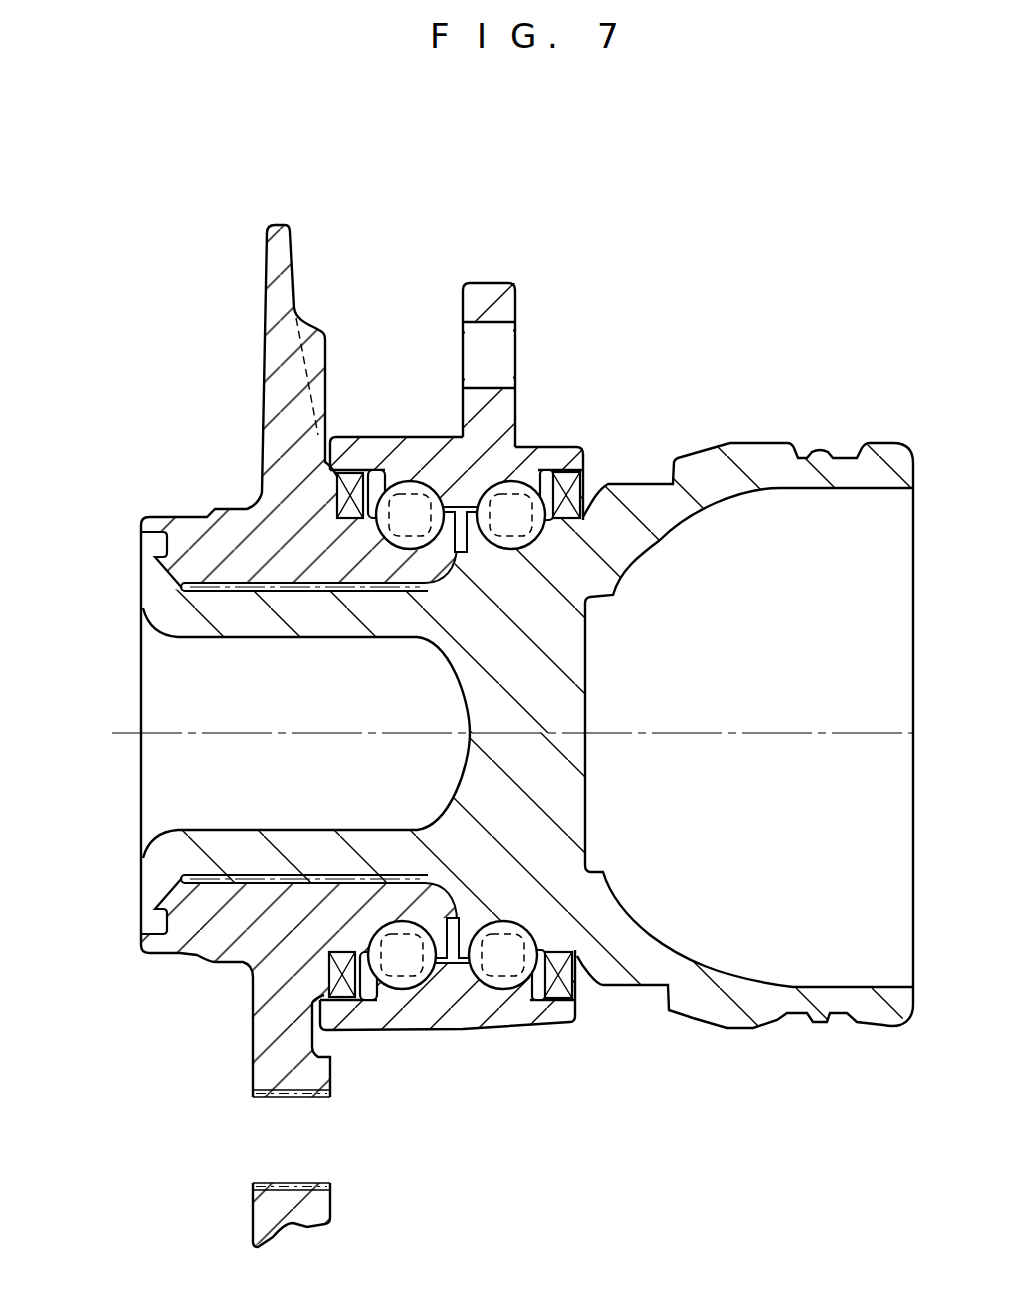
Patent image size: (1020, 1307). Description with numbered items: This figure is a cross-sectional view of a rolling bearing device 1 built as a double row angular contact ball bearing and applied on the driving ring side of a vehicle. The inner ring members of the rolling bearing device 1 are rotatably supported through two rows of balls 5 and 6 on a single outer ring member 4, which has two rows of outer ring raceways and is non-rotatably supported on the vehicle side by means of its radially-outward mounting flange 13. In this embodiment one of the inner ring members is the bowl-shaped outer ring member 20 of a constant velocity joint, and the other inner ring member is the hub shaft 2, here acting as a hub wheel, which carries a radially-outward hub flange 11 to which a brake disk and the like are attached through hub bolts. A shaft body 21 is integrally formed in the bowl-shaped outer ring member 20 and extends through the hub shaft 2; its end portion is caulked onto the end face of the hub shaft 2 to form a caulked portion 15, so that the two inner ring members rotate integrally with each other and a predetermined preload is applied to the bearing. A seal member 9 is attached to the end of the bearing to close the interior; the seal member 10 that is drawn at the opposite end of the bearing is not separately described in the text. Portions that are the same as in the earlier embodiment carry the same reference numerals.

The rolling bearing device 1 is at (555, 308).
The hub shaft 2 is at (299, 695).
The outer ring member 4 is at (451, 605).
The balls 5 is at (525, 483).
The balls 6 is at (402, 490).
The seal member 9 is at (585, 486).
The outboard seal 10 is at (337, 492).
The hub flange 11 is at (283, 227).
The mounting flange 13 is at (490, 292).
The caulked portion 15 is at (152, 585).
The bowl-shaped outer ring member of constant velocity joint 20 is at (717, 467).
The shaft body 21 is at (190, 627).